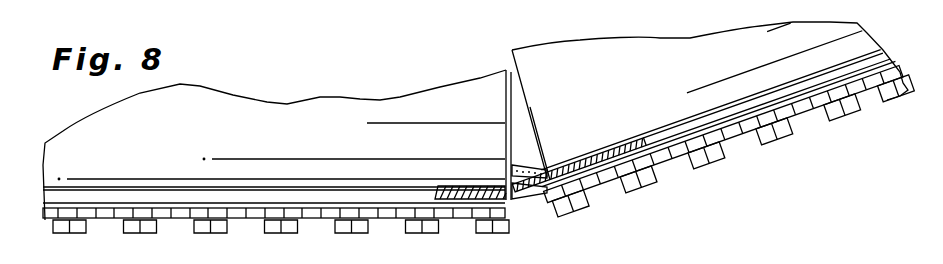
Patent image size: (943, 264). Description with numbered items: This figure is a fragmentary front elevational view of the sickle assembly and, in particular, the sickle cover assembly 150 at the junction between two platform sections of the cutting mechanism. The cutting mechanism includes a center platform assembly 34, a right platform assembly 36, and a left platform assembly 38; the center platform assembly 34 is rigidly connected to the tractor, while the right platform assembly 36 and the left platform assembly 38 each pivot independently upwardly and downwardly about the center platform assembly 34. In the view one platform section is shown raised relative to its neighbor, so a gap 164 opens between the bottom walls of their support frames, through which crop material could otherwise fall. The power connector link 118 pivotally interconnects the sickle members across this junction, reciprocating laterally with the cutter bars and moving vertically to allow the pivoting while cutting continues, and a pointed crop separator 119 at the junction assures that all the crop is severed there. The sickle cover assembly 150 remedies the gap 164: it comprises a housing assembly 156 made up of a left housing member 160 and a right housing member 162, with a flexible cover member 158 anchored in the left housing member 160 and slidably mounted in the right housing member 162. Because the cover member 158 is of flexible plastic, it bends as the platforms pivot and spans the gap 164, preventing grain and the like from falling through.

The center platform assembly 34 is at (337, 122).
The right platform assembly 36 is at (274, 111).
The left platform assembly 38 is at (688, 46).
The power connector link 118 is at (523, 170).
The pointed crop separator 119 is at (710, 54).
The sickle cover assembly 150 is at (706, 93).
The housing assembly 156 is at (459, 212).
The flexible cover member 158 is at (729, 140).
The left housing member 160 is at (460, 186).
The right housing member 162 is at (700, 120).
The gap 164 is at (530, 197).